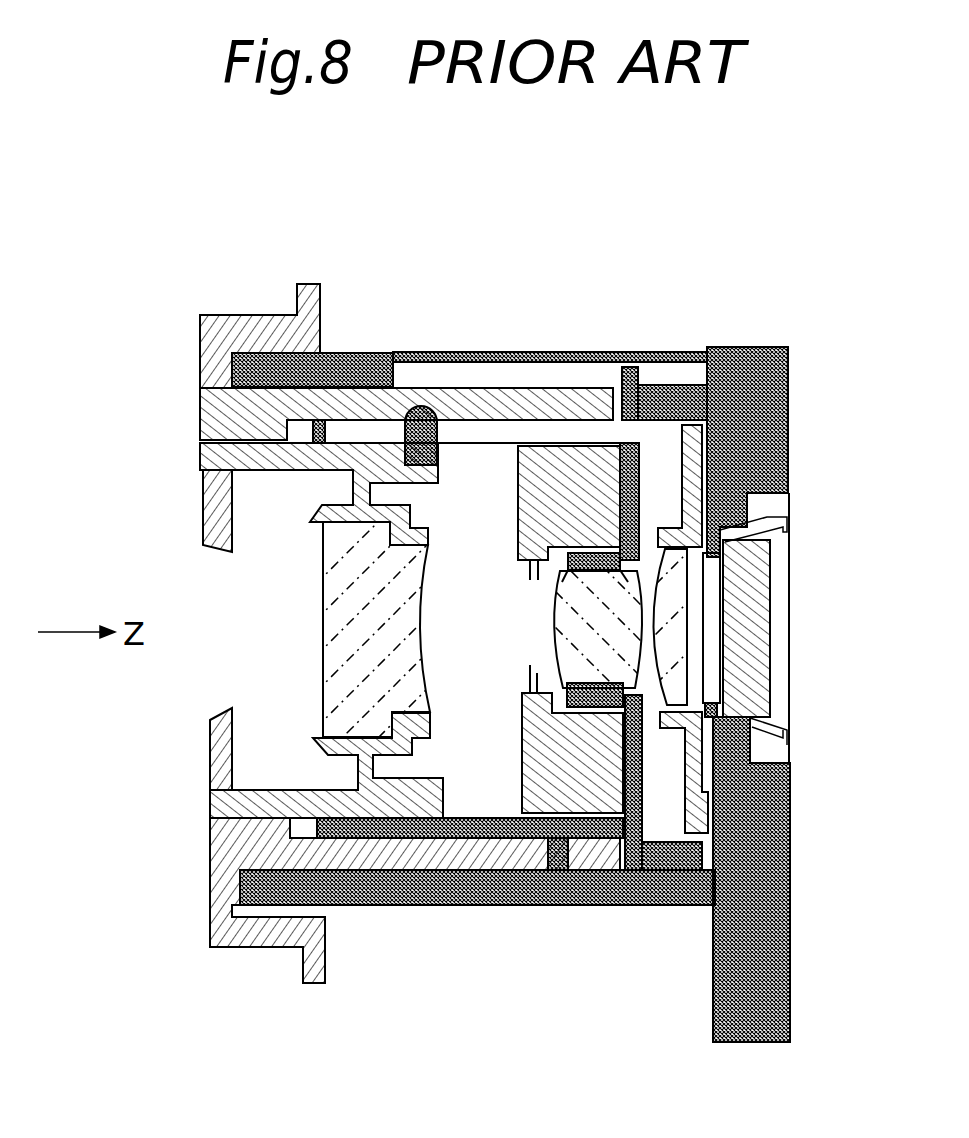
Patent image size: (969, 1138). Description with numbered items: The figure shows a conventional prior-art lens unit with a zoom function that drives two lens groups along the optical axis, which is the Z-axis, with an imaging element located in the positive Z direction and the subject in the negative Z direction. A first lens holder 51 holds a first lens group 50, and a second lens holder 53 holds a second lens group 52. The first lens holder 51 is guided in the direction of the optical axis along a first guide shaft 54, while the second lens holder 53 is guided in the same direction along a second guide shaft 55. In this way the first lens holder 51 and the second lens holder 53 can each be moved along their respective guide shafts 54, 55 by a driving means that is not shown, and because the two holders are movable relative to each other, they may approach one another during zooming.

The first lens group 50 is at (338, 590).
The first lens holder 51 is at (292, 358).
The second lens group 52 is at (573, 637).
The second lens holder 53 is at (640, 480).
The first guide shaft 54 is at (368, 430).
The second guide shaft 55 is at (552, 370).